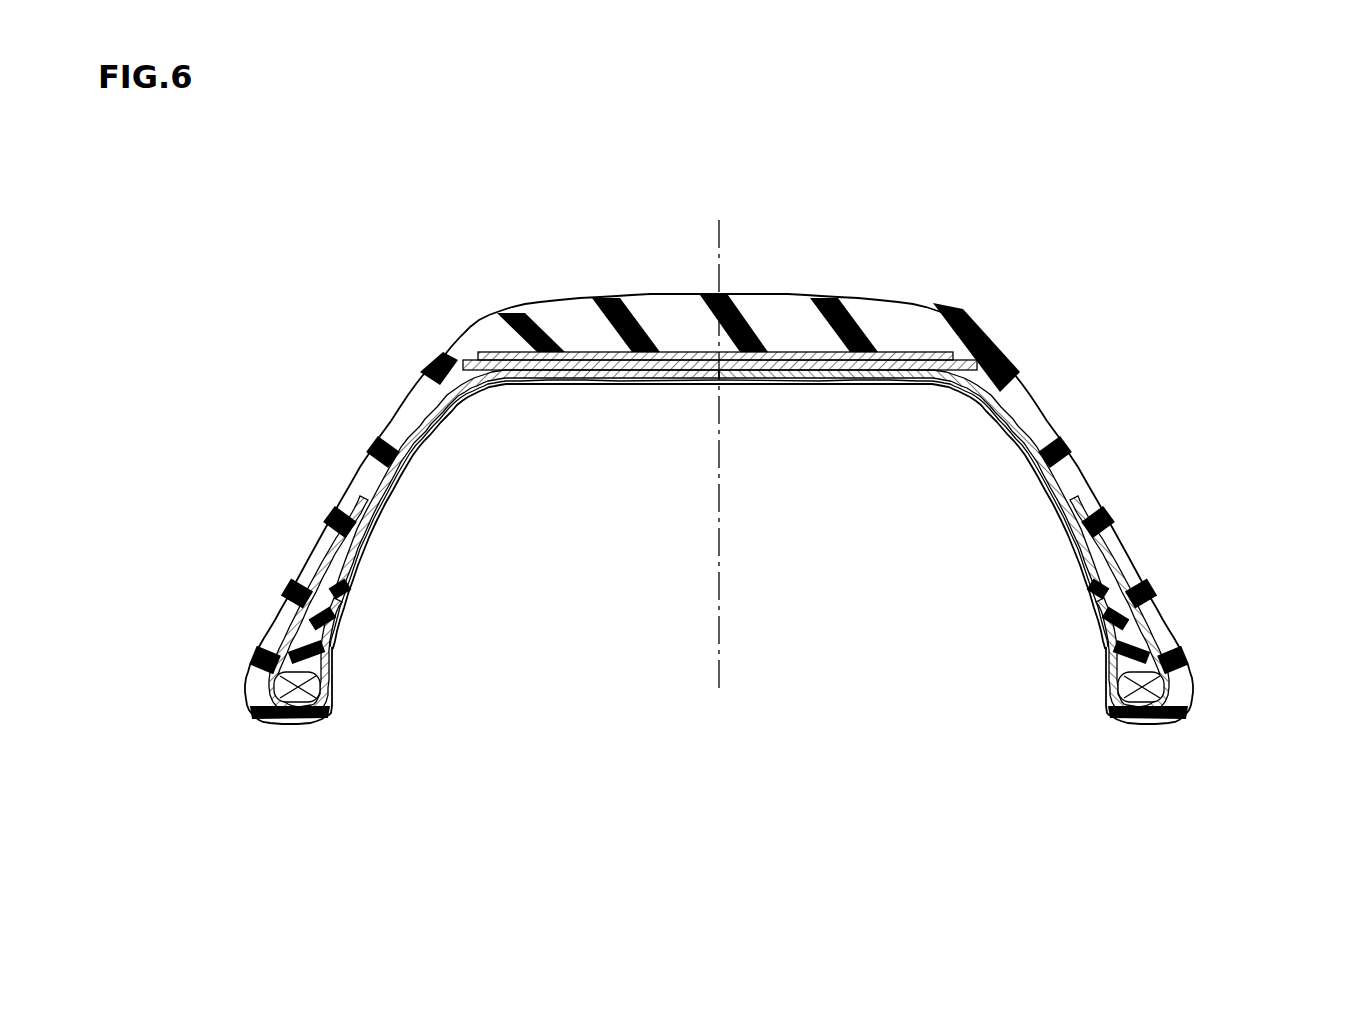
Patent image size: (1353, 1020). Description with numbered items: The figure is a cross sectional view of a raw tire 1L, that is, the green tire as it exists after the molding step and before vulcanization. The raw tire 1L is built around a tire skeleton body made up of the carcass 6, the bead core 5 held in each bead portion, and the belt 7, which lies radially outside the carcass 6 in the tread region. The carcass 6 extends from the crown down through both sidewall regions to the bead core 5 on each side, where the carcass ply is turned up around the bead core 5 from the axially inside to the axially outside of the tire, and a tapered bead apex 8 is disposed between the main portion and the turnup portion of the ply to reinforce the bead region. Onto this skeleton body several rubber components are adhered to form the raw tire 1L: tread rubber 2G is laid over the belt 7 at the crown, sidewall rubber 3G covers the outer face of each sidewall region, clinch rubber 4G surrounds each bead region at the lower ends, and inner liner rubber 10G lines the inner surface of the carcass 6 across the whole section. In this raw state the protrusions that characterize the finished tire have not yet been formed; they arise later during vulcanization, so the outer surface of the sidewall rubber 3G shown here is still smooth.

The raw tire 1L is at (433, 252).
The tread rubber 2G is at (640, 310).
The sidewall rubber 3G is at (412, 415).
The clinch rubber 4G is at (257, 688).
The bead core 5 is at (307, 693).
The carcass 6 is at (643, 378).
The belt 7 is at (793, 368).
The bead apex 8 is at (322, 598).
The inner liner rubber 10G is at (545, 386).